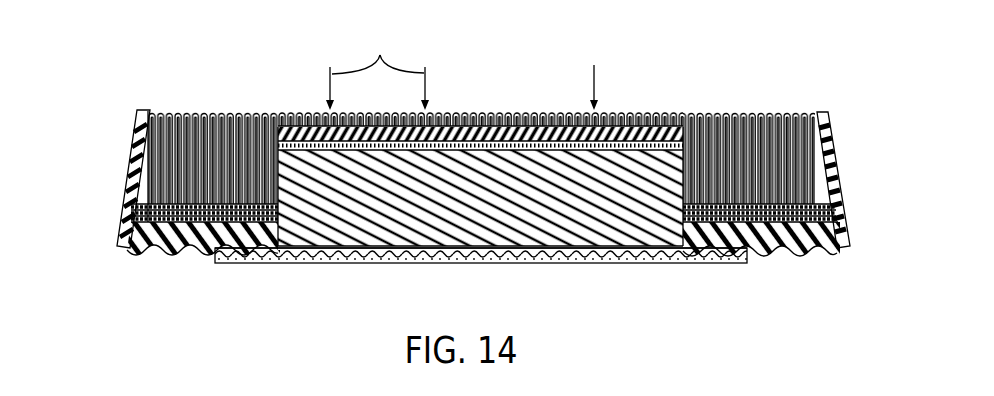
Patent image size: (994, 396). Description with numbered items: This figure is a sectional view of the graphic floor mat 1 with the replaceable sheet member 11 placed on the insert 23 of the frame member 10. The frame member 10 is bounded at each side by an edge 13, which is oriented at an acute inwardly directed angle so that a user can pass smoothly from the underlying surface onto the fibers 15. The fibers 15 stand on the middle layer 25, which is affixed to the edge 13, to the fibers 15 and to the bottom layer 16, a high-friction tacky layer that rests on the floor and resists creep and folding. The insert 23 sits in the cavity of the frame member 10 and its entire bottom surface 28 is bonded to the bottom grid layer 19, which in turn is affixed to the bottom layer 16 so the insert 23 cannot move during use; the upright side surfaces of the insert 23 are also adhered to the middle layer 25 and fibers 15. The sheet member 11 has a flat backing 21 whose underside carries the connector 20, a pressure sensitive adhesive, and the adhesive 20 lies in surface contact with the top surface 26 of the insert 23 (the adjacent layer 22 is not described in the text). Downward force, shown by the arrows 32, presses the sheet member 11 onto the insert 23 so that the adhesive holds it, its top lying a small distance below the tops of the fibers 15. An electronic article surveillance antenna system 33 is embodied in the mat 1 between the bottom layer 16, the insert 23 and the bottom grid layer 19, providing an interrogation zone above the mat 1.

The mat 1 is at (285, 76).
The frame member 10 is at (212, 106).
The replaceable sheet member 11 is at (369, 129).
The edge 13 is at (121, 226).
The fibers 15 is at (760, 120).
The bottom layer 16 is at (802, 258).
The bottom grid layer 19 is at (340, 262).
The connector 20 is at (615, 150).
The backing 21 is at (481, 128).
The upper boundary of intermediate layer 22 is at (557, 145).
The insert 23 is at (643, 215).
The middle layer 25 is at (840, 208).
The top surface 26 is at (441, 148).
The bottom surface 28 is at (436, 238).
The arrows 32 is at (462, 70).
The electronic article surveillance antenna system 33 is at (574, 258).